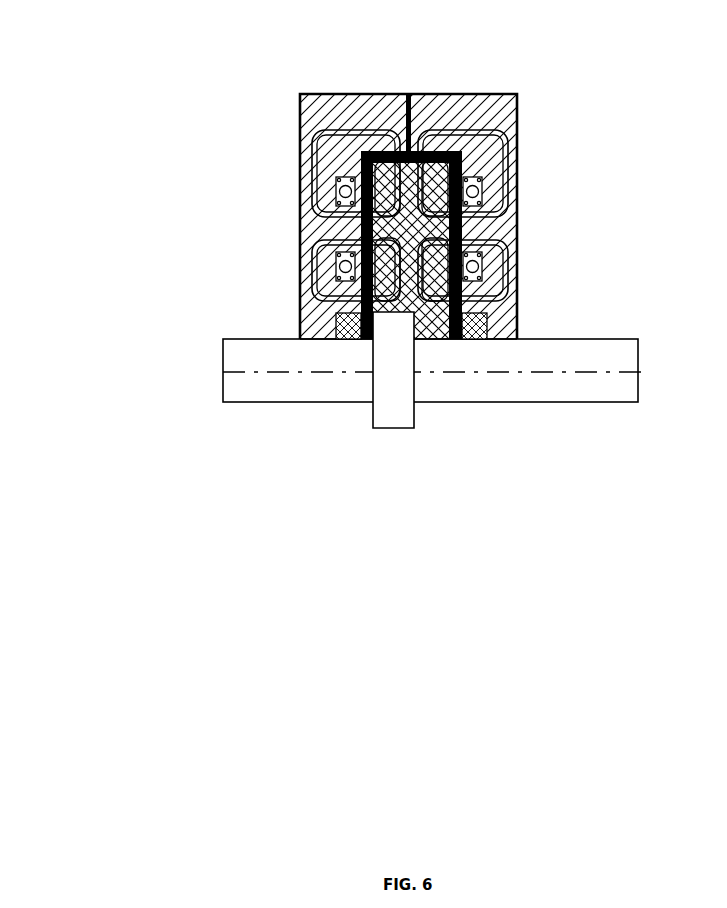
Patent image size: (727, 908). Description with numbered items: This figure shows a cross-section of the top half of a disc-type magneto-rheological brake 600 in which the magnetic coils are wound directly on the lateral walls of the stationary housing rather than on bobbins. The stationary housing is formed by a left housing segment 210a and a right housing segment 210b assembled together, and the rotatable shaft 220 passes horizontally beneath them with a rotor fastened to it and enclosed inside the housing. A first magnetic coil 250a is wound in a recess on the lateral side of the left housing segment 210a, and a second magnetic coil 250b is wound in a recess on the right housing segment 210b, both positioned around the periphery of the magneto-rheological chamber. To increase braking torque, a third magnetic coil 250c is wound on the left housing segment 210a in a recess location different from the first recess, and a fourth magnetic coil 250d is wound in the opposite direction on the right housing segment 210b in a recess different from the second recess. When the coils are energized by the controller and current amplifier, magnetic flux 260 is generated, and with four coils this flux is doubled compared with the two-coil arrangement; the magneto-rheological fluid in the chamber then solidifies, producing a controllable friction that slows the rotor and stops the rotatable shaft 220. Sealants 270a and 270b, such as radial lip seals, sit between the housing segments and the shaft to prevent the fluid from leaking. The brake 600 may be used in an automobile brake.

The disc-type magneto-rheological brake 600 is at (160, 112).
The left housing segment 210a is at (300, 321).
The right housing segment 210b is at (516, 105).
The rotatable shaft 220 is at (523, 403).
The first magnetic coil 250a is at (300, 170).
The second magnetic coil 250b is at (517, 173).
The third magnetic coil 250c is at (300, 237).
The fourth magnetic coil 250d is at (517, 254).
The magnetic flux 260 is at (300, 122).
The sealant 270a is at (353, 330).
The sealant 270b is at (517, 318).